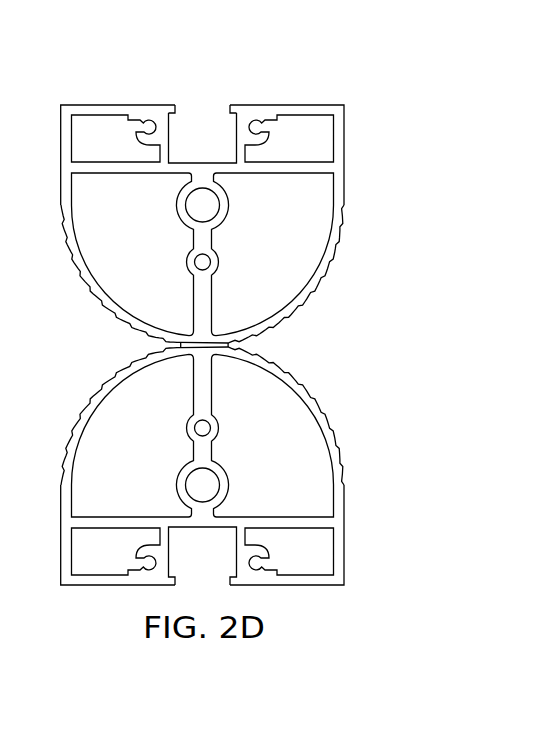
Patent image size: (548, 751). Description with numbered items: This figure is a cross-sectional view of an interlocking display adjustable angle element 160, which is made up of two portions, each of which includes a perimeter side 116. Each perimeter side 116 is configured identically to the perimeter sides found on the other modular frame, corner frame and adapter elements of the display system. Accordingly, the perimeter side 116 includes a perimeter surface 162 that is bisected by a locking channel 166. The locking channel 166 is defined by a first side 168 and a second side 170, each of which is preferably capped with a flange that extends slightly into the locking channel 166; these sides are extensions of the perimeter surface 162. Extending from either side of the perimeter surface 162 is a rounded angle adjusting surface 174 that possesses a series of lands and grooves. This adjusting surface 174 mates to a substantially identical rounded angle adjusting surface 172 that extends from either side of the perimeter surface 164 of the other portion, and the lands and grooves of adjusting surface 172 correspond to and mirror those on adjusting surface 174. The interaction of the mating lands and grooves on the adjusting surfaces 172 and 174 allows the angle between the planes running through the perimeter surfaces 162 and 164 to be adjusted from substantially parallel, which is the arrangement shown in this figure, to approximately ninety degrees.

The adjustable angle element 160 is at (231, 325).
The perimeter side 116 is at (98, 96).
The perimeter surface 162 is at (285, 105).
The perimeter surface 164 is at (288, 585).
The locking channel 166 is at (201, 113).
The first side 168 is at (177, 105).
The second side 170 is at (232, 105).
The rounded angle adjusting surface 172 is at (97, 388).
The rounded angle adjusting surface 174 is at (97, 303).